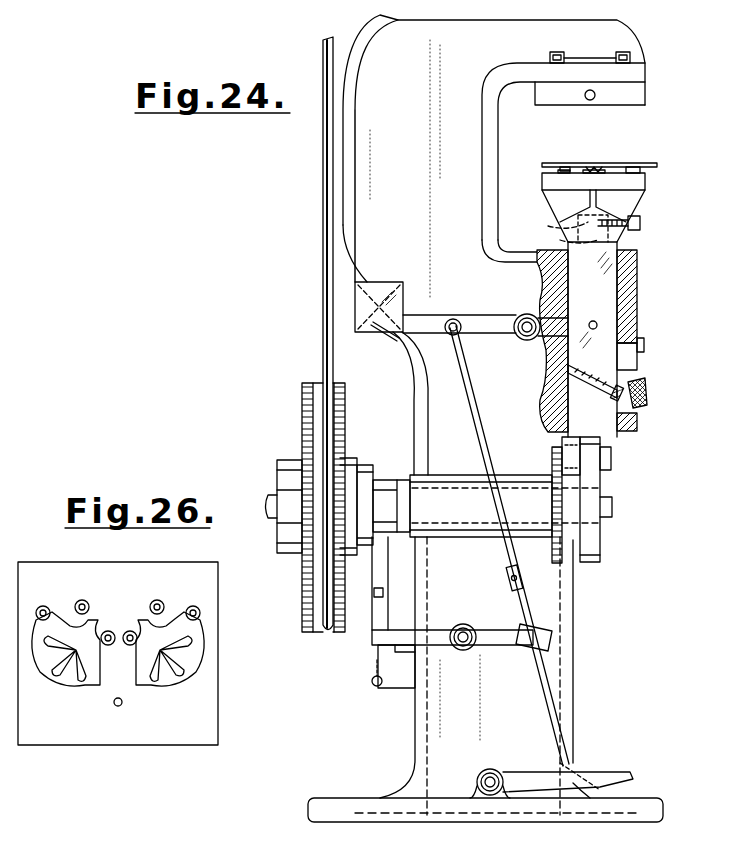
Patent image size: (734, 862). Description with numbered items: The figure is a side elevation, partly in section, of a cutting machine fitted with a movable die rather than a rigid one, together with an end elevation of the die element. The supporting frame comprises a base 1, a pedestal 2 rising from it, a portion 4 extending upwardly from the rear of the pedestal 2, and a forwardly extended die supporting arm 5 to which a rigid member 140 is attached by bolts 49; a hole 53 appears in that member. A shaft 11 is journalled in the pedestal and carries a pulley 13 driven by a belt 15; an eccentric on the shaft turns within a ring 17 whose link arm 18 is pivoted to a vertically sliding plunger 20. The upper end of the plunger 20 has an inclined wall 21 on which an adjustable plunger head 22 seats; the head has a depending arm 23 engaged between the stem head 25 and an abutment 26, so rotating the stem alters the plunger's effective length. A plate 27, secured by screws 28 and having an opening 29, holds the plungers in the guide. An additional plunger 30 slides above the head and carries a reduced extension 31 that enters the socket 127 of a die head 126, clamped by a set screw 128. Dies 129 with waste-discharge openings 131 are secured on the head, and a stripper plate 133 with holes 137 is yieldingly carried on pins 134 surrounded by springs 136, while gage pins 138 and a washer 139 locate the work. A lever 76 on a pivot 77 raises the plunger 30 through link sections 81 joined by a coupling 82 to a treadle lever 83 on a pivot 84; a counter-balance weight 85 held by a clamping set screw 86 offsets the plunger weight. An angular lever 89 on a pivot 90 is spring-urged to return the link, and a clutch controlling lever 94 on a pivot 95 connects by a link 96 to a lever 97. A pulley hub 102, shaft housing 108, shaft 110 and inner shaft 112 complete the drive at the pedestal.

In FIG. 24, the base 1 is at (637, 823).
In FIG. 24, the pedestal 2 is at (571, 656).
In FIG. 24, the frame portion 4 is at (360, 263).
In FIG. 24, the die supporting arm 5 is at (641, 60).
In FIG. 24, the shaft 11 is at (270, 514).
In FIG. 24, the pulley 13 is at (308, 612).
In FIG. 24, the belt 15 is at (322, 300).
In FIG. 24, the ring 17 is at (591, 563).
In FIG. 24, the link arm 18 is at (554, 451).
In FIG. 24, the plunger 20 is at (610, 470).
In FIG. 24, the inclined wall 21 is at (556, 386).
In FIG. 24, the plunger head 22 is at (615, 402).
In FIG. 24, the depending arm 23 is at (627, 432).
In FIG. 24, the head 25 is at (641, 393).
In FIG. 24, the abutment 26 is at (612, 394).
In FIG. 24, the plate 27 is at (628, 305).
In FIG. 24, the screws 28 is at (644, 345).
In FIG. 24, the opening 29 is at (633, 362).
In FIG. 24, the additional plunger 30 is at (619, 256).
In FIG. 24, the vertical extension 31 is at (560, 240).
In FIG. 24, the bolts 49 is at (619, 55).
In FIG. 24, the hole 53 is at (592, 101).
In FIG. 24, the lever 76 is at (438, 321).
In FIG. 24, the pivot 77 is at (525, 341).
In FIG. 24, the link sections 81 is at (477, 421).
In FIG. 24, the coupling 82 is at (512, 580).
In FIG. 24, the treadle lever 83 is at (528, 775).
In FIG. 24, the pivot 84 is at (490, 768).
In FIG. 24, the counter-balance weight 85 is at (364, 334).
In FIG. 24, the clamping set screw 86 is at (392, 343).
In FIG. 24, the angular lever 89 is at (435, 632).
In FIG. 24, the pivot 90 is at (462, 650).
In FIG. 24, the clutch controlling lever 94 is at (381, 616).
In FIG. 24, the pivot 95 is at (379, 595).
In FIG. 24, the link 96 is at (375, 676).
In FIG. 24, the lever 97 is at (400, 690).
In FIG. 24, the pulley hub 102 is at (352, 464).
In FIG. 24, the shaft housing 108 is at (398, 480).
In FIG. 24, the shaft 110 is at (414, 505).
In FIG. 24, the inner shaft 112 is at (478, 526).
In FIG. 24, the die head 126 is at (632, 208).
In FIG. 24, the socket 127 is at (548, 226).
In FIG. 24, the set screw 128 is at (641, 224).
In FIG. 24, the dies 129 is at (606, 170).
In FIG. 26, the dies 129 is at (107, 650).
In FIG. 24, the openings 131 is at (595, 169).
In FIG. 26, the openings 131 is at (62, 673).
In FIG. 24, the stripper plate 133 is at (650, 165).
In FIG. 26, the stripper plate 133 is at (118, 746).
In FIG. 24, the pins 134 is at (593, 182).
In FIG. 26, the pins 134 is at (115, 706).
In FIG. 24, the springs 136 is at (641, 171).
In FIG. 26, the holes 137 is at (46, 672).
In FIG. 24, the gage pins 138 is at (565, 169).
In FIG. 26, the gage pins 138 is at (155, 605).
In FIG. 24, the washer 139 is at (558, 170).
In FIG. 24, the rigid member 140 is at (628, 98).